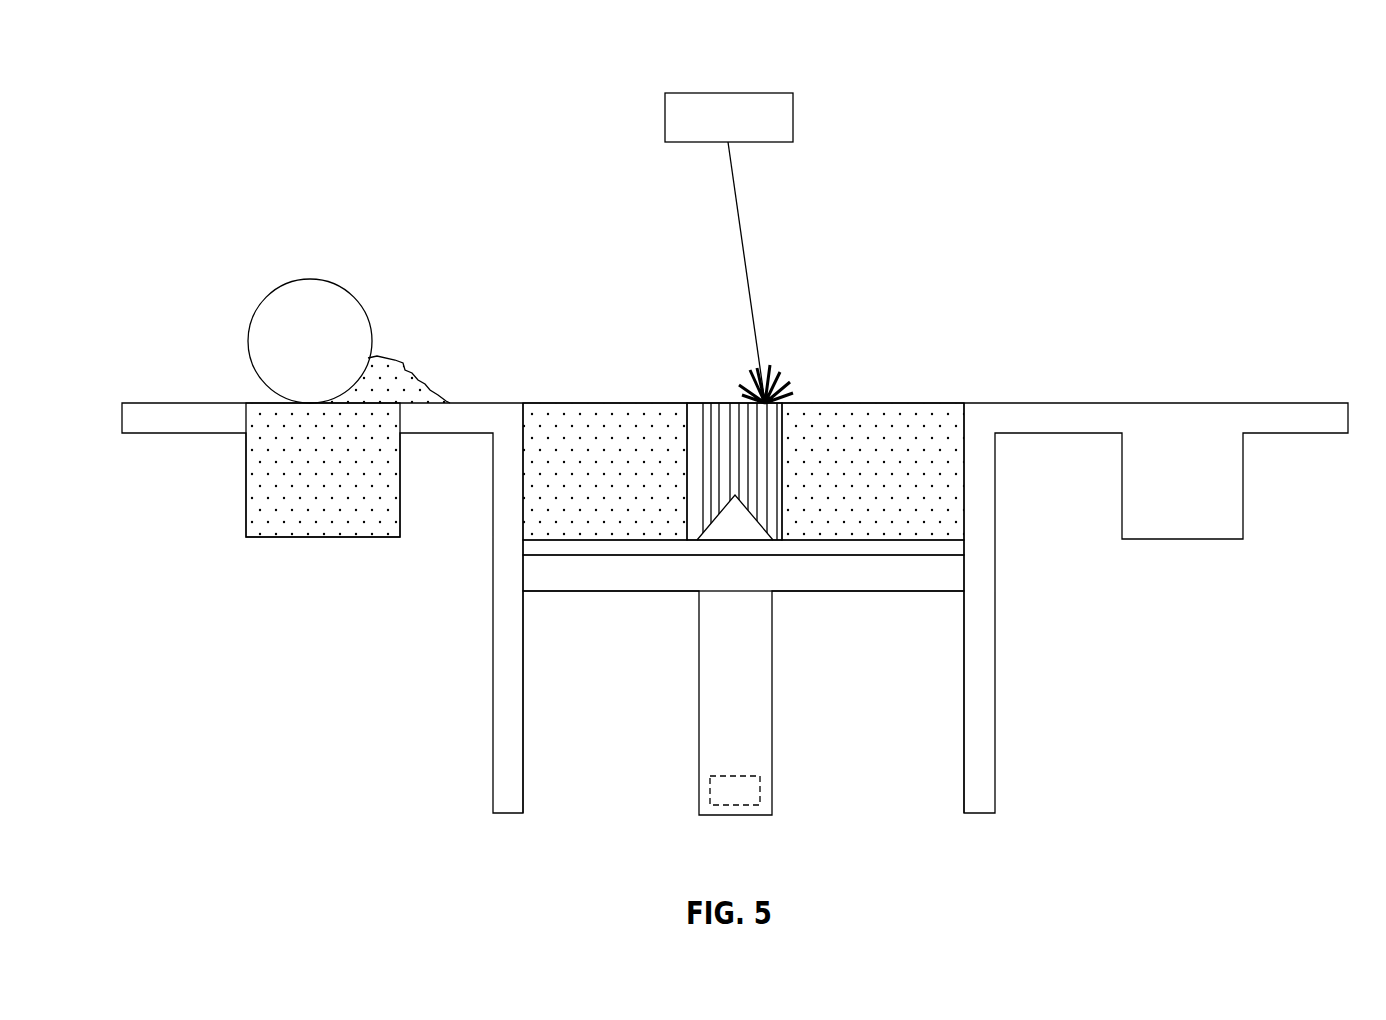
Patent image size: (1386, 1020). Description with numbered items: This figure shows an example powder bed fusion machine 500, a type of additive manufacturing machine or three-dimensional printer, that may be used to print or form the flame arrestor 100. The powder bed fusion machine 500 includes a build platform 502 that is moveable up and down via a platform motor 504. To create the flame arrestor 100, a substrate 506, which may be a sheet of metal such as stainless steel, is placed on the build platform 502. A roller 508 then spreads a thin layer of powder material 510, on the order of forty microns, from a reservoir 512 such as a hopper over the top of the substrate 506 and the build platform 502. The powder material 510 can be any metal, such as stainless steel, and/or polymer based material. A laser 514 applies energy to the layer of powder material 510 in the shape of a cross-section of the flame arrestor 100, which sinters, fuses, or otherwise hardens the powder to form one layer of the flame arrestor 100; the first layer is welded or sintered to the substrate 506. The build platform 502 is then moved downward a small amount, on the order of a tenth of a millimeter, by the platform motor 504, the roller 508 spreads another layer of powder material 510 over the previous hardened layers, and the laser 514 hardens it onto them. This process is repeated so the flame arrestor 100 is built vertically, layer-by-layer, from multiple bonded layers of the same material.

The powder bed fusion machine 500 is at (303, 64).
The build platform 502 is at (542, 577).
The platform motor 504 is at (725, 788).
The substrate 506 is at (537, 548).
The roller 508 is at (295, 312).
The powder material 510 is at (550, 423).
The reservoir 512 is at (246, 494).
The laser 514 is at (742, 93).
The flame arrestor 100 is at (784, 419).